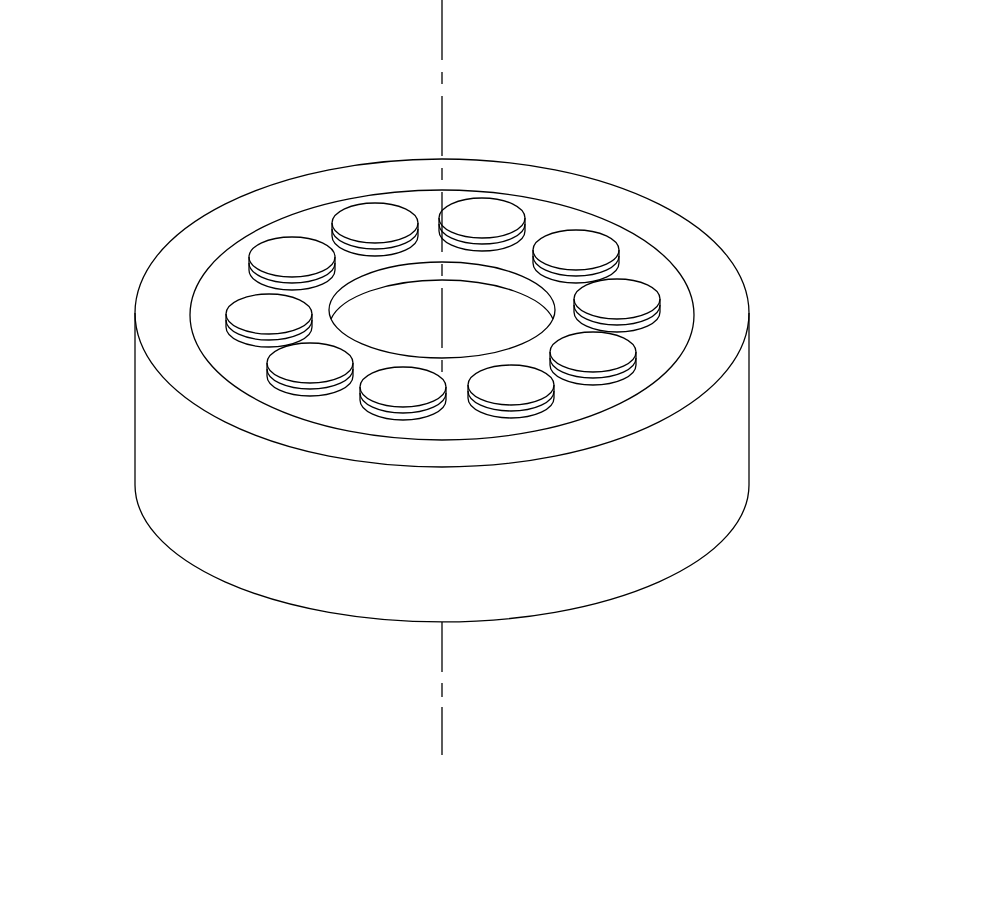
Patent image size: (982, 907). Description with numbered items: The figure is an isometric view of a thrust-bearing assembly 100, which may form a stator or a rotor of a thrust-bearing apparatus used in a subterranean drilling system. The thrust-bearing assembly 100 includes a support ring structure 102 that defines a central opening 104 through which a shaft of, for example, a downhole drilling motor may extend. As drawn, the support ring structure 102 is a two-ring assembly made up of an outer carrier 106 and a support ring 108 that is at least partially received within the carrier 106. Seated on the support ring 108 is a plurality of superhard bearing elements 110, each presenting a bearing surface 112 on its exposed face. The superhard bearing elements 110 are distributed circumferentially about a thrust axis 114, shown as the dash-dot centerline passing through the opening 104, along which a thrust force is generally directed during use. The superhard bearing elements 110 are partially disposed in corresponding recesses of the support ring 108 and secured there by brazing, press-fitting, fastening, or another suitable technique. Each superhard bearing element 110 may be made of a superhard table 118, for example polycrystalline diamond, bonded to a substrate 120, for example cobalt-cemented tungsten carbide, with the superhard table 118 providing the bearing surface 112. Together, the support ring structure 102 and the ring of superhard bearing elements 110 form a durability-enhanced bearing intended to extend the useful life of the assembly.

The thrust-bearing assembly 100 is at (168, 135).
The support ring structure 102 is at (752, 377).
The opening 104 is at (426, 358).
The carrier 106 is at (183, 552).
The support ring 108 is at (203, 330).
The superhard bearing elements 110 is at (504, 209).
The bearing surface 112 is at (480, 212).
The thrust axis 114 is at (442, 30).
The superhard table 118 is at (530, 233).
The substrate 120 is at (538, 240).